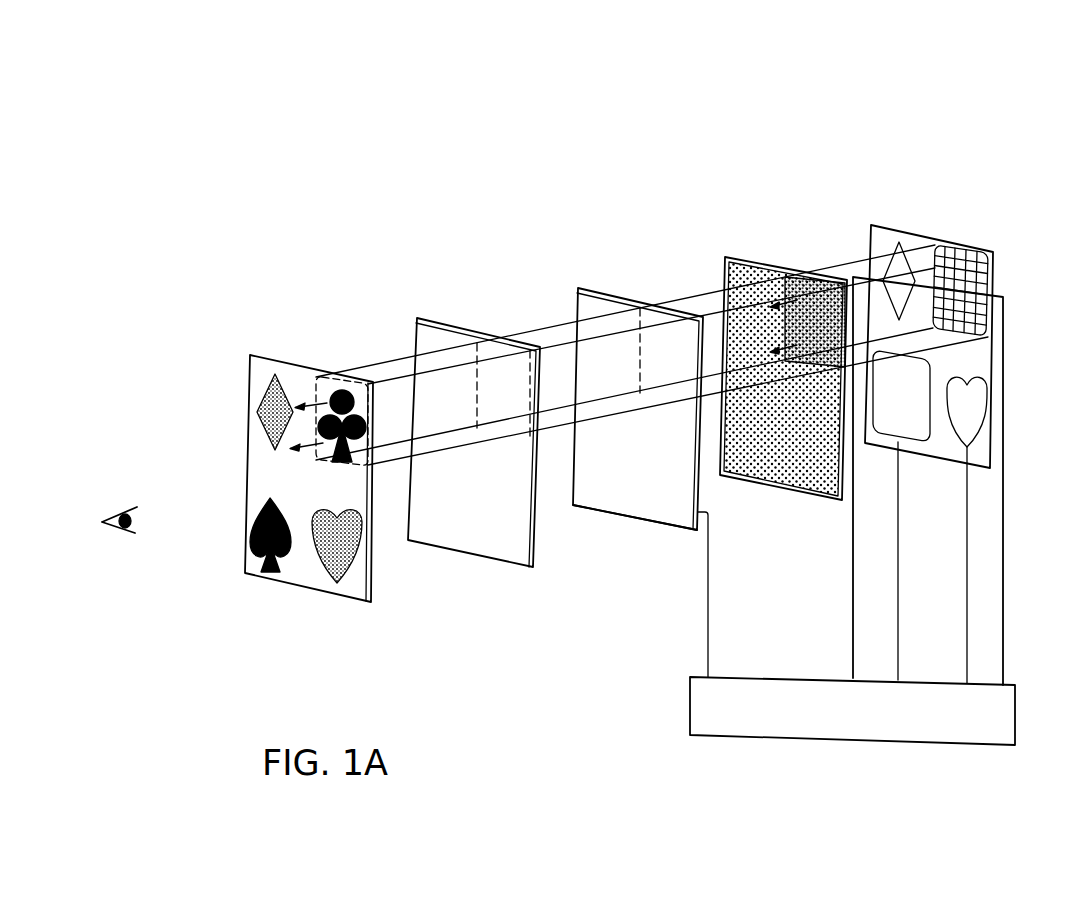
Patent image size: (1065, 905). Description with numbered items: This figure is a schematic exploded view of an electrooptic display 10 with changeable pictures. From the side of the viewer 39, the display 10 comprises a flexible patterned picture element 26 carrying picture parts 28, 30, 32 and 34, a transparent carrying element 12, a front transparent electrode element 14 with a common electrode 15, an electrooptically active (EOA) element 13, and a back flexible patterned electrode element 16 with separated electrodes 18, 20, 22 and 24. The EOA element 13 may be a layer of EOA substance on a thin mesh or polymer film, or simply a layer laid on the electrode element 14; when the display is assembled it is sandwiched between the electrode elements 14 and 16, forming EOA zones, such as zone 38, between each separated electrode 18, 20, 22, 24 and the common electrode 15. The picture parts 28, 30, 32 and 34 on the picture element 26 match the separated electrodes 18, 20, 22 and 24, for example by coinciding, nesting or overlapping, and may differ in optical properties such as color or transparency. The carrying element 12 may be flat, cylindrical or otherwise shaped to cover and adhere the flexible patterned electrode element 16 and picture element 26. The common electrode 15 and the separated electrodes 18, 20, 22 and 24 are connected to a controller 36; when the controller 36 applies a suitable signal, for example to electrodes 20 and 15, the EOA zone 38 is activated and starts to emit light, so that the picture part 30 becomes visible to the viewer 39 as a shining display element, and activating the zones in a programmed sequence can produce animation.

The electrooptic display 10 is at (631, 195).
The transparent carrying element 12 is at (470, 331).
The electrooptically active element 13 is at (745, 258).
The front transparent electrode element 14 is at (600, 289).
The common electrode 15 is at (623, 502).
The back flexible patterned electrode element 16 is at (930, 238).
The separated electrode 18 is at (873, 226).
The separated electrode 20 is at (975, 247).
The separated electrode 22 is at (913, 412).
The separated electrode 24 is at (983, 413).
The flexible patterned picture element 26 is at (316, 372).
The picture part 28 is at (262, 409).
The picture part 30 is at (344, 388).
The picture part 32 is at (258, 514).
The picture part 34 is at (320, 563).
The controller 36 is at (688, 707).
The EOA zone 38 is at (808, 278).
The viewer 39 is at (118, 532).